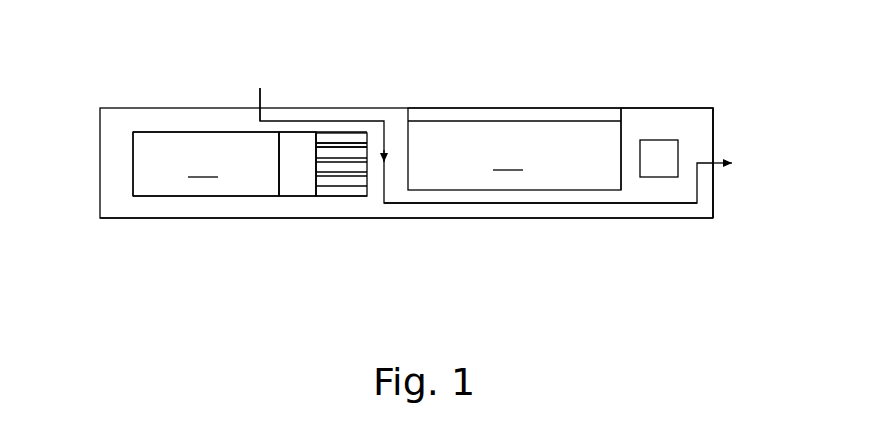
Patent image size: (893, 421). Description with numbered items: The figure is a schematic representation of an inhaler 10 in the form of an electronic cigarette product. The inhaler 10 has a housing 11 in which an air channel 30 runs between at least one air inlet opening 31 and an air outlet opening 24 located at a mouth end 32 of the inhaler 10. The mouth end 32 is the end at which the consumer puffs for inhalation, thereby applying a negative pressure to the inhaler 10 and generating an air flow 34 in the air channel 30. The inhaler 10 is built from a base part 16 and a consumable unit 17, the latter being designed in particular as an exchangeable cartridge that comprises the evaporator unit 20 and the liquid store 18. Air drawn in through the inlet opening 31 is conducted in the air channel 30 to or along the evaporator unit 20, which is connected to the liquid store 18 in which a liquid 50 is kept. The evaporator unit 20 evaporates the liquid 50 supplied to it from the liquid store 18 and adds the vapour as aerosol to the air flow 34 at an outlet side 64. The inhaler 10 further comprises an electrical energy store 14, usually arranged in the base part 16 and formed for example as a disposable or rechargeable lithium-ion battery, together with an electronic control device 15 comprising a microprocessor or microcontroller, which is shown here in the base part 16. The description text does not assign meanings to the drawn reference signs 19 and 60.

The inhaler 10 is at (450, 267).
The housing 11 is at (646, 108).
The electrical energy store 14 is at (514, 149).
The electronic control device 15 is at (660, 140).
The base part 16 is at (393, 107).
The consumable unit 17 is at (233, 199).
The liquid store 18 is at (168, 197).
The wick chamber 19 is at (295, 188).
The evaporator unit 20 is at (316, 199).
The air outlet opening 24 is at (716, 167).
The air channel 30 is at (563, 217).
The air inlet opening 31 is at (259, 96).
The mouth end 32 is at (713, 118).
The air flow 34 is at (637, 204).
The liquid 50 is at (206, 164).
The heater 60 is at (350, 183).
The outlet side 64 is at (369, 188).